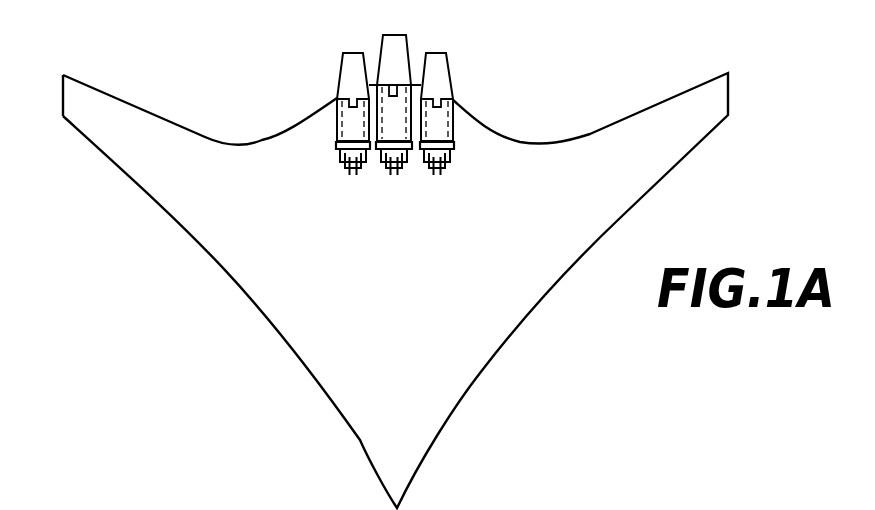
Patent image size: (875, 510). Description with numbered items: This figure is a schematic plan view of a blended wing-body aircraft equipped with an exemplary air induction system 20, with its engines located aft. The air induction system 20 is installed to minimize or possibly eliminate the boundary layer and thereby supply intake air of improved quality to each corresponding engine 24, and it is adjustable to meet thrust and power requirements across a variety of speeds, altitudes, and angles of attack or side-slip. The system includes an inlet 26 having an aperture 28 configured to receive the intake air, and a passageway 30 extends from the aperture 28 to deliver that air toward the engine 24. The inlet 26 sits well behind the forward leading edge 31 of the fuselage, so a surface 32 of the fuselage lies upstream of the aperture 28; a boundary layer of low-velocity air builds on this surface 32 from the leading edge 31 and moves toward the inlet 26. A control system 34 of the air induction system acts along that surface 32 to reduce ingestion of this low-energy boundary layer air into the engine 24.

The air induction system 20 is at (409, 121).
The engine 24 is at (472, 50).
The inlet 26 is at (412, 133).
The aperture 28 is at (452, 147).
The passageway 30 is at (449, 121).
The leading edge 31 is at (495, 352).
The surface 32 is at (445, 213).
The control system 34 is at (452, 171).